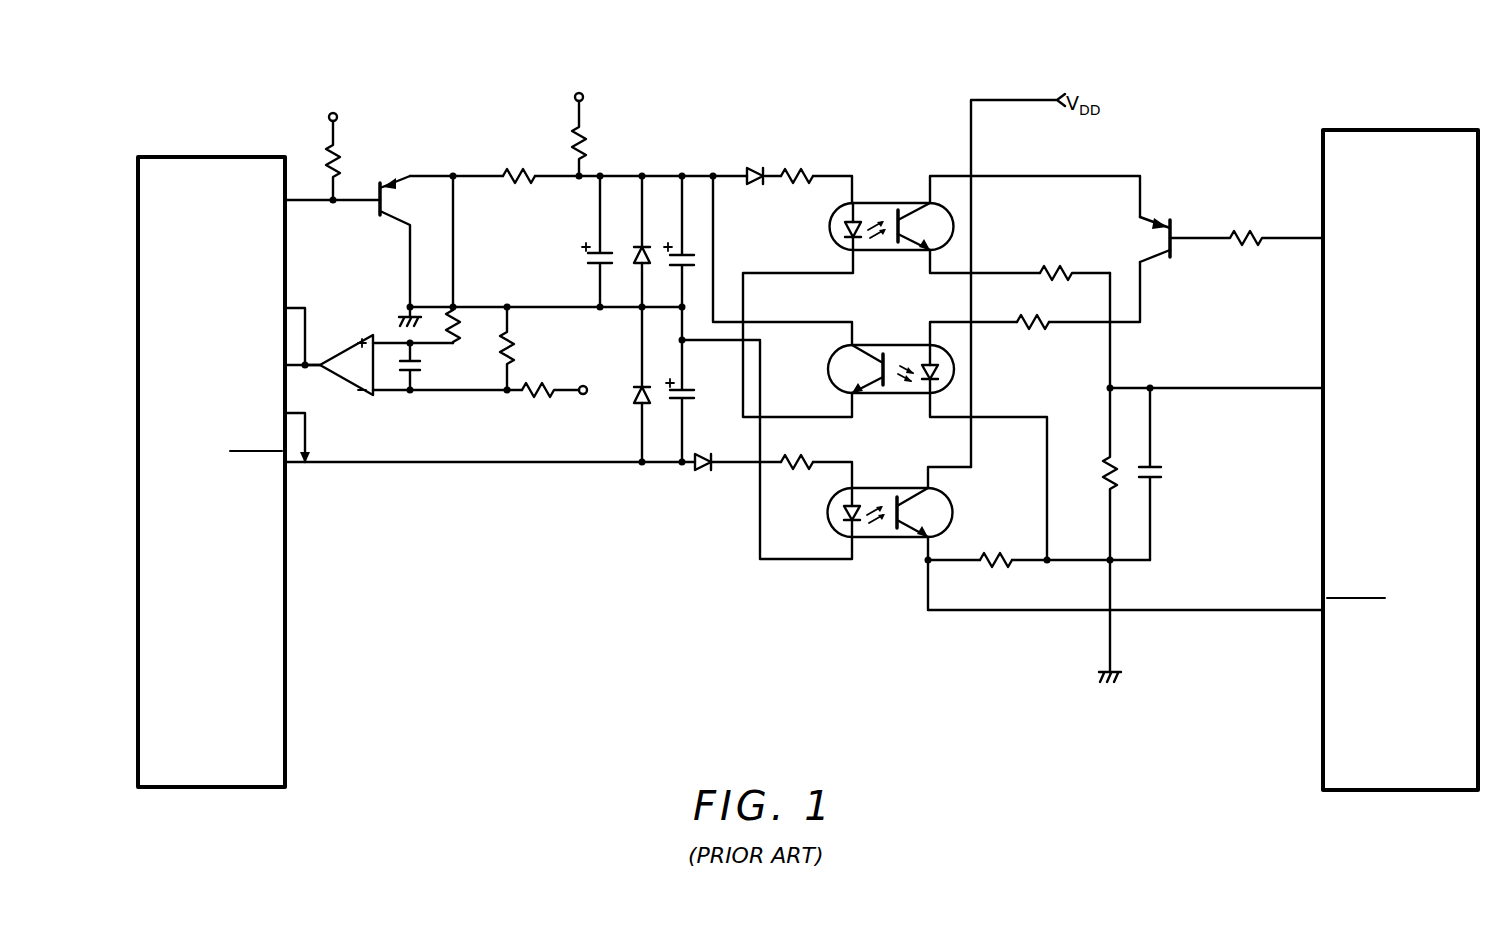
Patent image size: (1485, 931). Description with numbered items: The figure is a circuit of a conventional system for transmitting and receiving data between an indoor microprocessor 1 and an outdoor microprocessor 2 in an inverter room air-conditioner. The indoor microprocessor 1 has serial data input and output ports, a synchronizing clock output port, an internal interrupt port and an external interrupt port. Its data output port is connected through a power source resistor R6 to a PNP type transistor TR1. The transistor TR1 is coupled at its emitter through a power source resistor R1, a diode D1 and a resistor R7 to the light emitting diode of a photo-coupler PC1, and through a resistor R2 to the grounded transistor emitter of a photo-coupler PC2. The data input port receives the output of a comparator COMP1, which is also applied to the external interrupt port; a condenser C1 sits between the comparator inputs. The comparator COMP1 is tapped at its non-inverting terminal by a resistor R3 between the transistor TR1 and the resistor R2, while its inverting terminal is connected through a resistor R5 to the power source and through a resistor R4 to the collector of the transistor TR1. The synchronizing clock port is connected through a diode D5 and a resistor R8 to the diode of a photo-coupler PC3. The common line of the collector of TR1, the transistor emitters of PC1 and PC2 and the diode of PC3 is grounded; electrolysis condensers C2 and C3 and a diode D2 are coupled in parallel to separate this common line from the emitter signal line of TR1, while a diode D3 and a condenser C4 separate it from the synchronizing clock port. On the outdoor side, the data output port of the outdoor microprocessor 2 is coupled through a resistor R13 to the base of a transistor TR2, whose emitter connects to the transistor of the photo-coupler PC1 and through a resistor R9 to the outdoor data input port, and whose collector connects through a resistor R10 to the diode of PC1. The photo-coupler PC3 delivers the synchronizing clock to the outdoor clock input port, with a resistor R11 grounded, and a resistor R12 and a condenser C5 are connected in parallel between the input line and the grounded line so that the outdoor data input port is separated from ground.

The indoor microprocessor 1 is at (211, 472).
The outdoor microprocessor 2 is at (1400, 460).
The power source resistor R1 is at (586, 119).
The resistor R2 is at (519, 165).
The resistor R3 is at (465, 325).
The resistor R4 is at (519, 348).
The resistor R5 is at (564, 394).
The power source resistor R6 is at (341, 145).
The resistor R7 is at (797, 162).
The resistor R8 is at (797, 449).
The resistor R9 is at (1075, 260).
The resistor R10 is at (1033, 308).
The resistor R11 is at (996, 546).
The resistor R12 is at (1091, 472).
The resistor R13 is at (1246, 223).
The condenser C1 is at (421, 366).
The electrolysis condenser C2 is at (587, 241).
The electrolysis condenser C3 is at (688, 258).
The condenser C4 is at (689, 401).
The condenser C5 is at (1160, 474).
The diode D1 is at (754, 163).
The diode D2 is at (652, 281).
The diode D3 is at (651, 424).
The diode D5 is at (708, 479).
The PNP type transistor TR1 is at (406, 241).
The transistor TR2 is at (1143, 239).
The photo-coupler PC1 is at (892, 211).
The photo-coupler PC2 is at (891, 355).
The photo-coupler PC3 is at (889, 498).
The comparator COMP1 is at (348, 353).